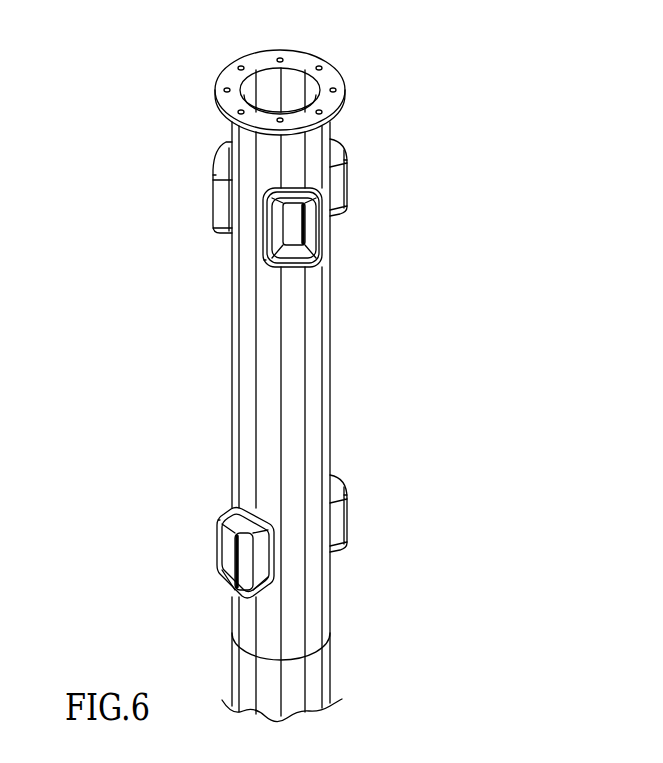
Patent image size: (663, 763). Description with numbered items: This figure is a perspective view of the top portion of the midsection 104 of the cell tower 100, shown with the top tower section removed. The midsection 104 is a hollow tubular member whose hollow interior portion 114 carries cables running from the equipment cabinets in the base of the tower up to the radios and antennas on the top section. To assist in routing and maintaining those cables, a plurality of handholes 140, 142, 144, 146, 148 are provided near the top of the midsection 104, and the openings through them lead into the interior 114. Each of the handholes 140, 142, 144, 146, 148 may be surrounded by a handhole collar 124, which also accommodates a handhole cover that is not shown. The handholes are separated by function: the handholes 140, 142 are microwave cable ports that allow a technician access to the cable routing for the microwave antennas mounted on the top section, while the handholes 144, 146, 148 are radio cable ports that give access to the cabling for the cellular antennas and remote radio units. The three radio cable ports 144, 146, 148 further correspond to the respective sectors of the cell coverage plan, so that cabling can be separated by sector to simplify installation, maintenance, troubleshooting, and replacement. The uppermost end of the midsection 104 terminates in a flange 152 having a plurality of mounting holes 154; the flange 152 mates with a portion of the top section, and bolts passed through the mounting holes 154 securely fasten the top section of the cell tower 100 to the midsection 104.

The cell tower 100 is at (192, 392).
The midsection 104 is at (333, 582).
The hollow interior portion 114 is at (288, 228).
The handhole collar 124 is at (343, 150).
The handhole (microwave cable port) 140 is at (205, 540).
The handhole (microwave cable port) 142 is at (368, 503).
The handhole (radio cable port) 144 is at (195, 185).
The handhole (radio cable port) 146 is at (314, 284).
The handhole (radio cable port) 148 is at (363, 172).
The flange 152 is at (312, 55).
The mounting holes 154 is at (224, 90).